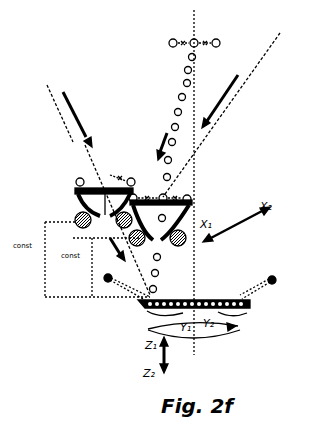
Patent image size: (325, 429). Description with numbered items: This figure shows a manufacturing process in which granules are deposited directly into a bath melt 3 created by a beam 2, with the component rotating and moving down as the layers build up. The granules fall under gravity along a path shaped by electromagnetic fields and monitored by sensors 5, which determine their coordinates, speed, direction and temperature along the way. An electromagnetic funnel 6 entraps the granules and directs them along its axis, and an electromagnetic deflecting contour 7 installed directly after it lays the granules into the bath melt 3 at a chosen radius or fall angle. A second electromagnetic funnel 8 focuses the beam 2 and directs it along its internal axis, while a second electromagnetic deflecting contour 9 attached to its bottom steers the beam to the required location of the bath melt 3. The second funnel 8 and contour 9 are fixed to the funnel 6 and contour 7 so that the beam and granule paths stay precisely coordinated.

The beam 2 is at (86, 143).
The bath melt 3 is at (147, 306).
The sensors 5 is at (106, 281).
The electromagnetic funnel 6 is at (196, 201).
The electromagnetic deflecting contour 7 is at (181, 242).
The second electromagnetic funnel 8 is at (73, 187).
The second electromagnetic deflecting contour 9 is at (74, 219).